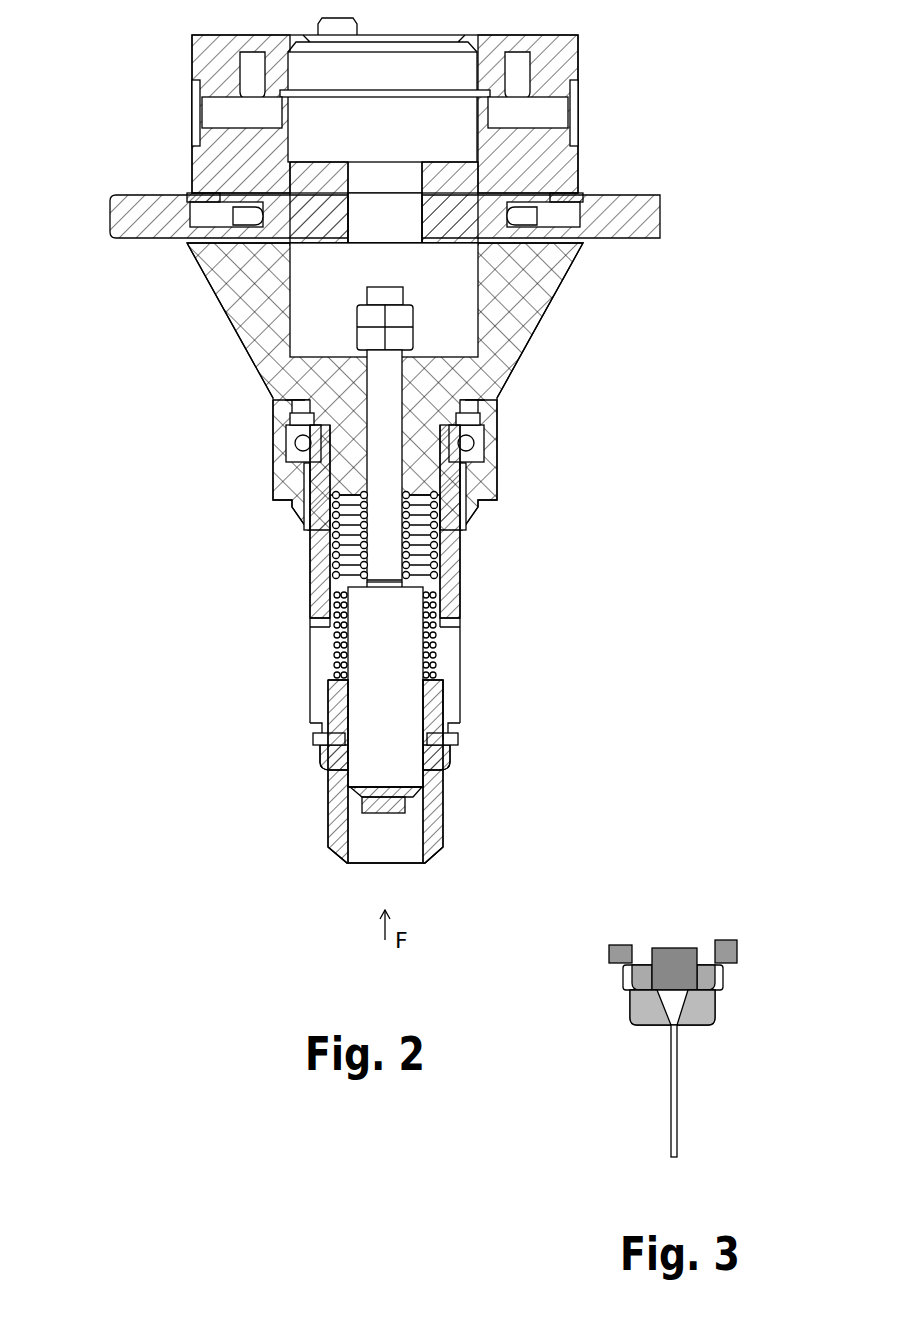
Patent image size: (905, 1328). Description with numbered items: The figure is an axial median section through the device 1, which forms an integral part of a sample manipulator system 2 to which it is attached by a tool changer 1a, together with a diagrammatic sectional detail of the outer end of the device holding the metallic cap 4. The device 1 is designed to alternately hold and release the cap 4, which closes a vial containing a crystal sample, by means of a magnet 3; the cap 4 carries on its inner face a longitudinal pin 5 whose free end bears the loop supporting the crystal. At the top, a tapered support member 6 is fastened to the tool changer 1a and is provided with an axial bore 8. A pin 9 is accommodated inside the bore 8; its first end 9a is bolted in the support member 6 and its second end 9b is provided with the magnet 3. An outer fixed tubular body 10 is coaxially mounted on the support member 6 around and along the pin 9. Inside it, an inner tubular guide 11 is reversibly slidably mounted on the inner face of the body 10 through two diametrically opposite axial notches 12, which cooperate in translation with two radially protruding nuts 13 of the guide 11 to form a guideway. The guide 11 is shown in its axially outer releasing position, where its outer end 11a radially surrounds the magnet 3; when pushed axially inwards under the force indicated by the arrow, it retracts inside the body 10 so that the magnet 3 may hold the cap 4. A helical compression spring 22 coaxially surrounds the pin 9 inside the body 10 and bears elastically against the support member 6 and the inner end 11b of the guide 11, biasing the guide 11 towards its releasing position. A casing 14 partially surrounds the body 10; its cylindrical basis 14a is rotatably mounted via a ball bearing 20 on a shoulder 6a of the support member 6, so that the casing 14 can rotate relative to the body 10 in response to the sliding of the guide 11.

In FIG. 2, the device 1 is at (141, 602).
In FIG. 2, the tool changer 1a is at (192, 160).
In FIG. 2, the sample manipulator system 2 is at (672, 74).
In FIG. 2, the magnet 3 is at (388, 807).
In FIG. 3, the magnet 3 is at (674, 961).
In FIG. 3, the cap 4 is at (616, 985).
In FIG. 3, the longitudinal pin 5 is at (669, 1090).
In FIG. 2, the tapered support member 6 is at (553, 307).
In FIG. 2, the shoulder 6a is at (492, 405).
In FIG. 2, the axial bore 8 is at (394, 520).
In FIG. 2, the pin 9 is at (376, 680).
In FIG. 2, the first end 9a is at (405, 370).
In FIG. 2, the second end 9b is at (407, 773).
In FIG. 2, the outer fixed tubular body 10 is at (468, 570).
In FIG. 2, the inner tubular guide 11 is at (446, 813).
In FIG. 2, the outer end 11a is at (433, 850).
In FIG. 3, the outer end 11a is at (729, 949).
In FIG. 2, the inner end 11b is at (448, 673).
In FIG. 2, the axial notches 12 is at (320, 698).
In FIG. 2, the radially protruding nuts 13 is at (312, 740).
In FIG. 2, the casing 14 is at (502, 478).
In FIG. 2, the cylindrical basis 14a is at (273, 468).
In FIG. 2, the ball bearing 20 is at (296, 443).
In FIG. 2, the helical compression spring 22 is at (447, 657).